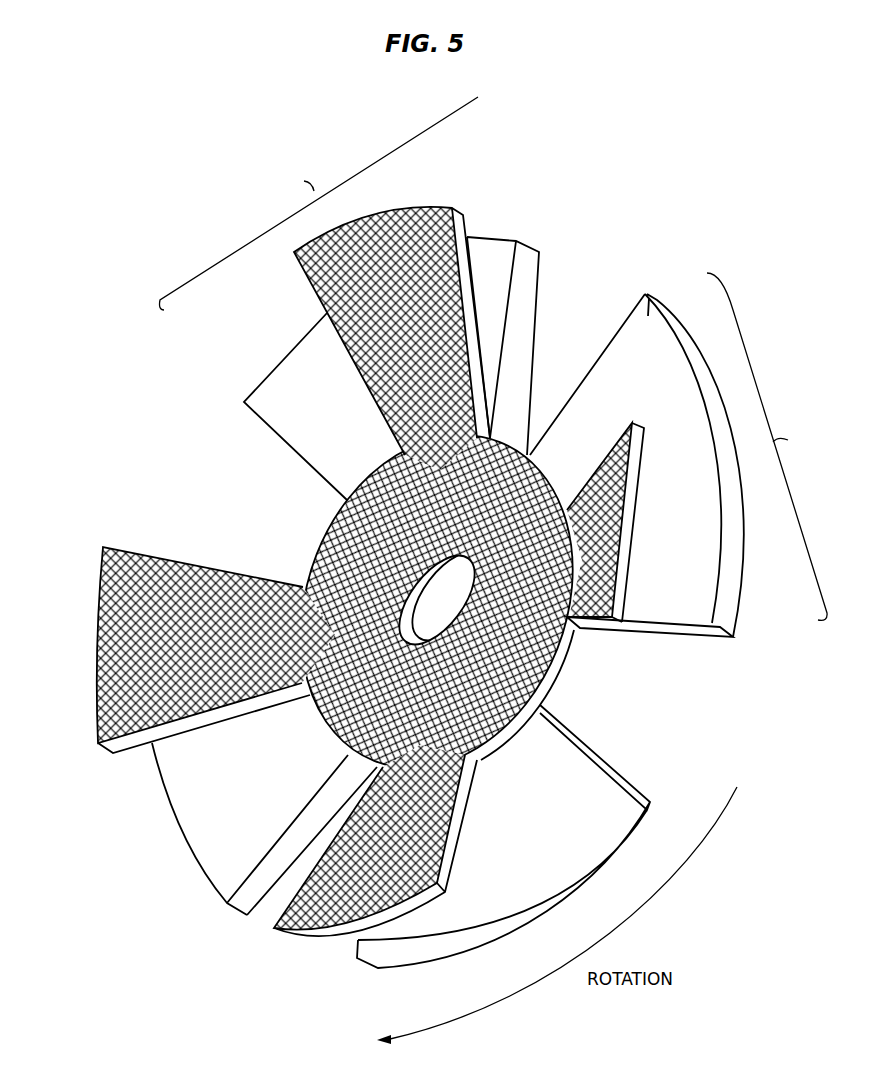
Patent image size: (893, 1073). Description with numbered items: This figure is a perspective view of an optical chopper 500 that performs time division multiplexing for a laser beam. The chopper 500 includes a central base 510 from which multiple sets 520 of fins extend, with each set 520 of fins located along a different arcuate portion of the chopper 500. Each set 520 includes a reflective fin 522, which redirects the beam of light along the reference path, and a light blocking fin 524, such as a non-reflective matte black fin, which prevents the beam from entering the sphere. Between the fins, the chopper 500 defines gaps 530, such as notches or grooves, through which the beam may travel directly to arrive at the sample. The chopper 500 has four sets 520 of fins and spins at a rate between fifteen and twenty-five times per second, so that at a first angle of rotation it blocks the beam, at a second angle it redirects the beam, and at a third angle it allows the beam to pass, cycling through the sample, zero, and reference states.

The optical chopper 500 is at (387, 534).
The base 510 is at (320, 558).
The set of fins 520 is at (494, 358).
The reflective fin 522 is at (265, 368).
The light blocking fin 524 is at (303, 272).
The gap 530 is at (180, 465).